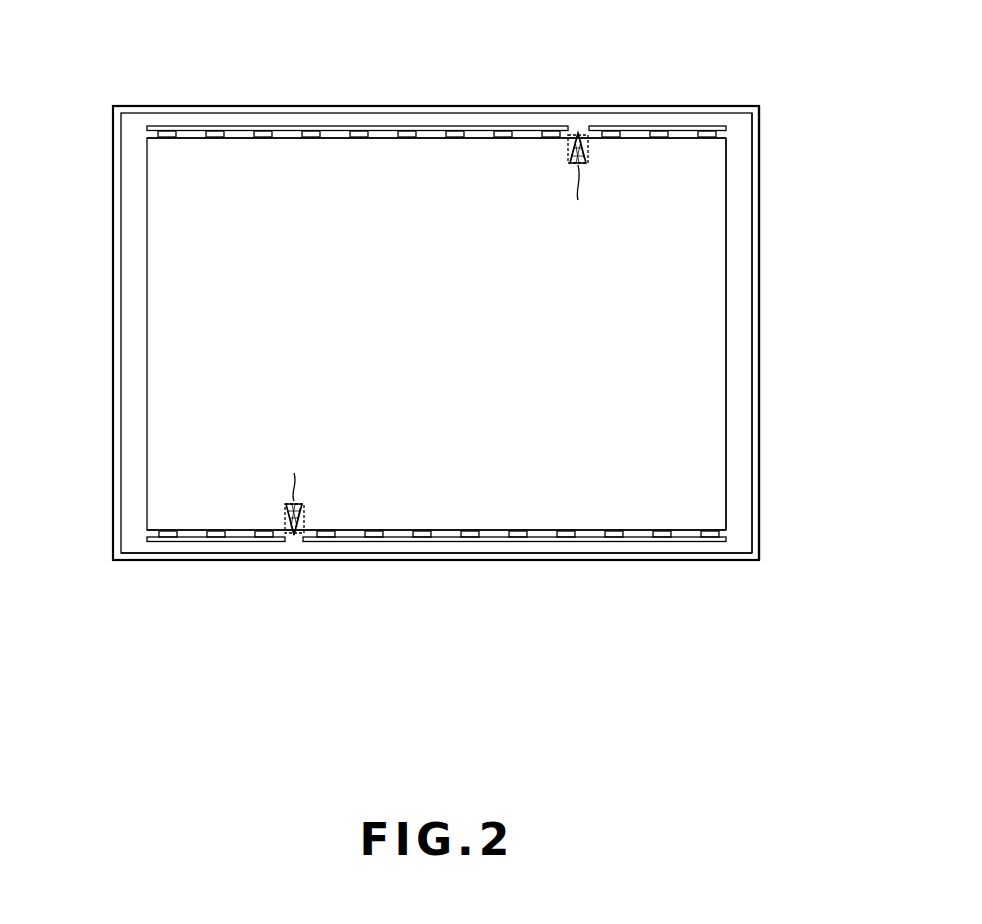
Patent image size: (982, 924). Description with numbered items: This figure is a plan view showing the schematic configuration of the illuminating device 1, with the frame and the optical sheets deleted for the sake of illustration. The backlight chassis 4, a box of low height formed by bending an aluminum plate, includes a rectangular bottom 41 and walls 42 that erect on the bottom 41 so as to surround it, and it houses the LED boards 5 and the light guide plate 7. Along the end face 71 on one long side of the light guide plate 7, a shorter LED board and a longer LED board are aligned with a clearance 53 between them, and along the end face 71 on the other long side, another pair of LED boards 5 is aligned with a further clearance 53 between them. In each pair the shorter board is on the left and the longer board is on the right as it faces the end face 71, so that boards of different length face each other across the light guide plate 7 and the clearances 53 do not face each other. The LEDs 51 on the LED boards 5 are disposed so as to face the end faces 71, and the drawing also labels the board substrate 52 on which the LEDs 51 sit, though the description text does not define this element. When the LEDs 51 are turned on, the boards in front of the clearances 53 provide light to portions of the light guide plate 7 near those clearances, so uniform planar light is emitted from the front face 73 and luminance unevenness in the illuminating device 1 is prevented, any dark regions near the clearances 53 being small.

The illuminating device 1 is at (765, 642).
The backlight chassis 4 is at (762, 312).
The bottom 41 is at (738, 257).
The walls 42 is at (586, 556).
The LED boards 5 is at (425, 128).
The LEDs 51 is at (168, 131).
The substrate 52 is at (147, 128).
The clearance 53 is at (578, 128).
The light guide plate 7 is at (700, 412).
The end faces 71 is at (180, 150).
The front face 73 is at (713, 383).